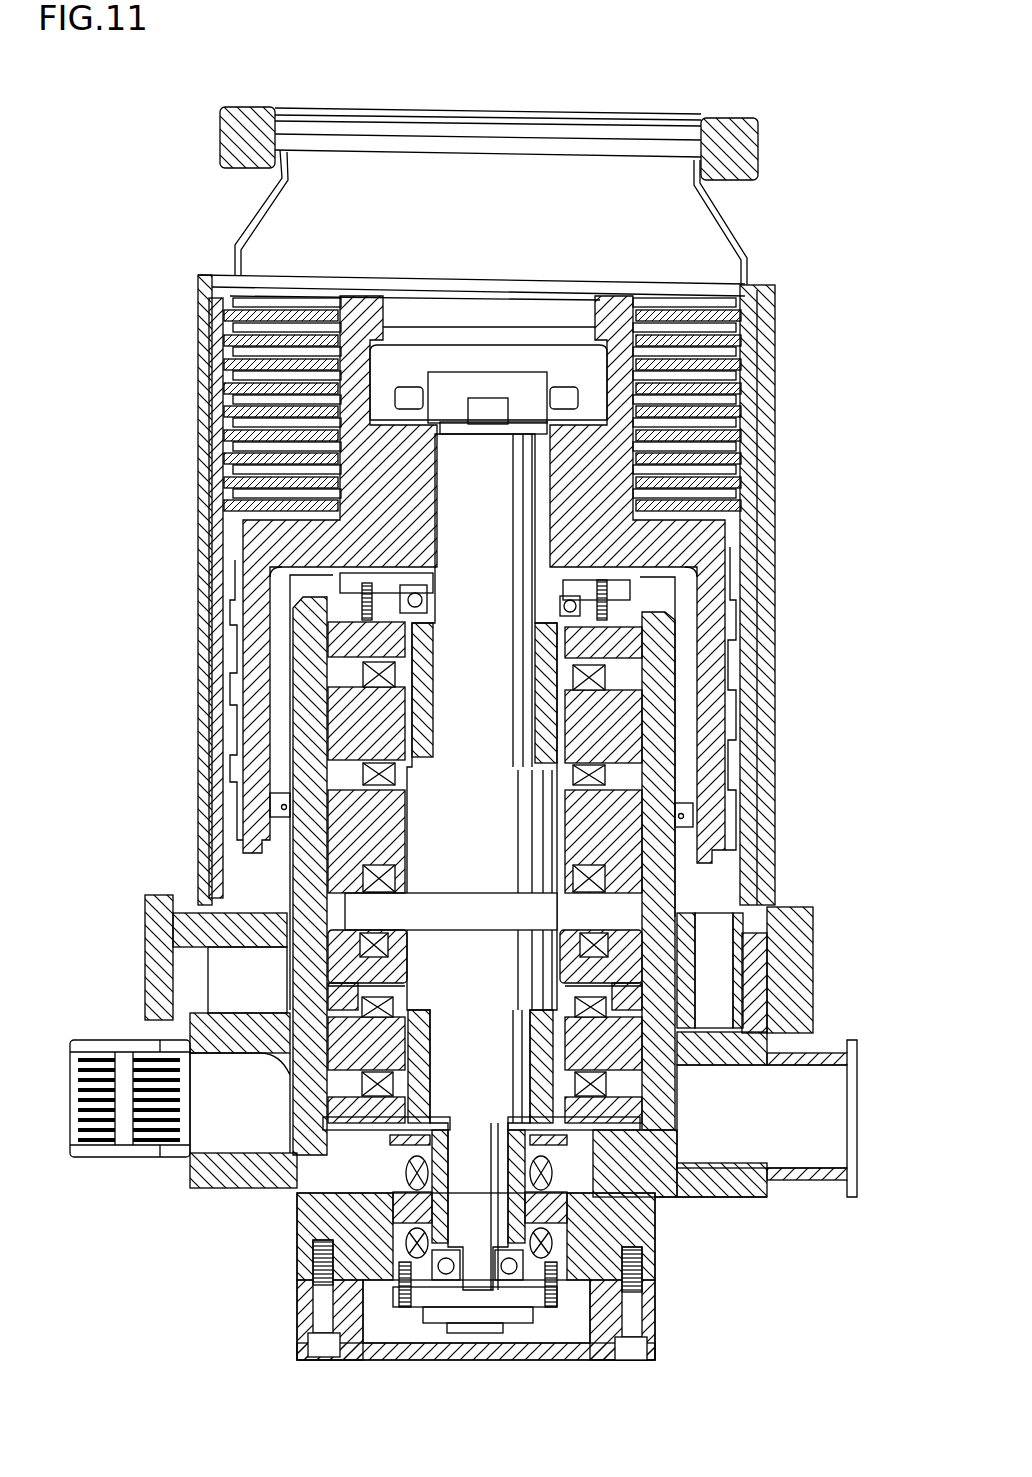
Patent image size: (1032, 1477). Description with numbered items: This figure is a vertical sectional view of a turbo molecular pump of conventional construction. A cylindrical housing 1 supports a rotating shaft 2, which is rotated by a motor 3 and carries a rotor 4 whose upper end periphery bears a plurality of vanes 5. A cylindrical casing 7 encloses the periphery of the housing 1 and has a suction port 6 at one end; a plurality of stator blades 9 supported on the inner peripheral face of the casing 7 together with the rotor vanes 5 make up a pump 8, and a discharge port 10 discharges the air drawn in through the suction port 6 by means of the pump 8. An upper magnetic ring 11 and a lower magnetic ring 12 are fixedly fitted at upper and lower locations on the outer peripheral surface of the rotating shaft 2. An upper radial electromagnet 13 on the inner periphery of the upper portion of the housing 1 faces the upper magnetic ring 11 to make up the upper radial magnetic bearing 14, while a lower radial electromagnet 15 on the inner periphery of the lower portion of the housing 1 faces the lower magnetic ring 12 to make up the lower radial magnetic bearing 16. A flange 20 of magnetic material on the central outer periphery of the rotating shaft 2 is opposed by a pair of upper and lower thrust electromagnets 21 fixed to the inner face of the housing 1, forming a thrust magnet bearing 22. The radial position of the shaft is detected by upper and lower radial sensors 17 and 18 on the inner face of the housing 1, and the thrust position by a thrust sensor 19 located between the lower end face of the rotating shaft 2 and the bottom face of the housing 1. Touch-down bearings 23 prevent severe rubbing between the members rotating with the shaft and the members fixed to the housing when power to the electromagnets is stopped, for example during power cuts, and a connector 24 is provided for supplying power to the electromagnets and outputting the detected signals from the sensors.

The cylindrical housing 1 is at (670, 702).
The rotating shaft 2 is at (545, 825).
The motor 3 is at (575, 1215).
The rotor 4 is at (213, 522).
The vanes 5 is at (226, 352).
The suction port 6 is at (738, 143).
The cylindrical casing 7 is at (765, 690).
The pump 8 is at (226, 385).
The stator blades 9 is at (748, 398).
The discharge port 10 is at (820, 1072).
The upper magnetic ring 11 is at (330, 690).
The lower magnetic ring 12 is at (400, 1110).
The upper radial electromagnet 13 is at (340, 778).
The upper radial magnetic bearing 14 is at (300, 725).
The lower radial electromagnet 15 is at (345, 1090).
The lower radial magnetic bearing 16 is at (333, 1052).
The upper radial sensor 17 is at (633, 643).
The lower radial sensor 18 is at (690, 1125).
The thrust sensor 19 is at (500, 1322).
The flange 20 is at (813, 927).
The thrust electromagnets 21 is at (330, 905).
The thrust magnet bearing 22 is at (330, 868).
The touch-down bearings 23 is at (327, 612).
The electrical connector 24 is at (90, 1160).